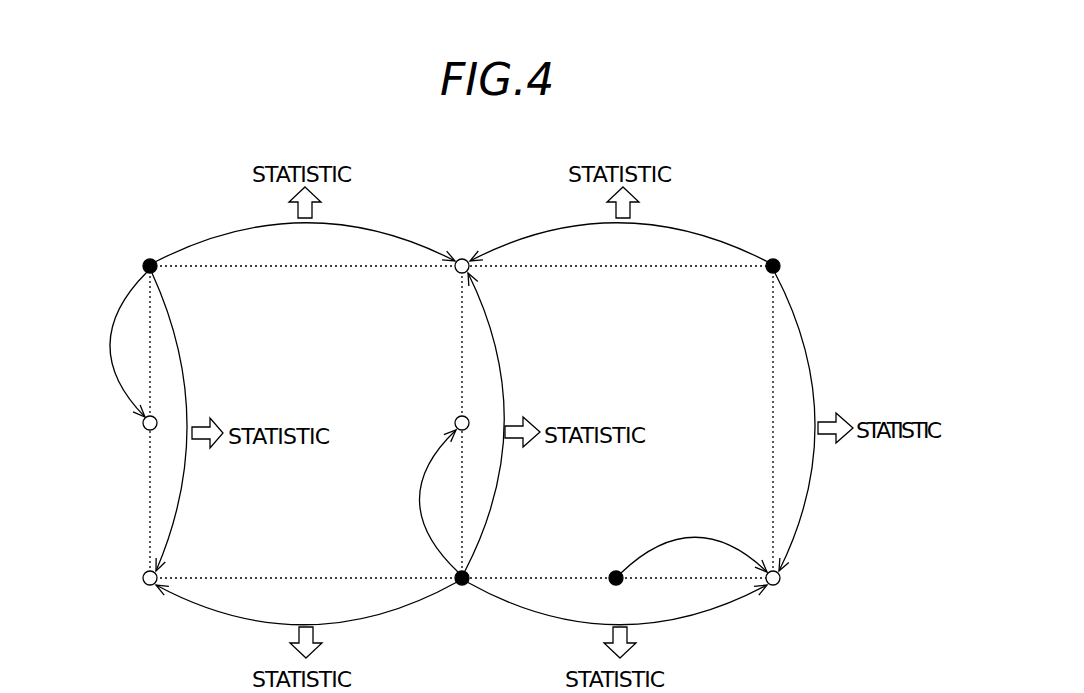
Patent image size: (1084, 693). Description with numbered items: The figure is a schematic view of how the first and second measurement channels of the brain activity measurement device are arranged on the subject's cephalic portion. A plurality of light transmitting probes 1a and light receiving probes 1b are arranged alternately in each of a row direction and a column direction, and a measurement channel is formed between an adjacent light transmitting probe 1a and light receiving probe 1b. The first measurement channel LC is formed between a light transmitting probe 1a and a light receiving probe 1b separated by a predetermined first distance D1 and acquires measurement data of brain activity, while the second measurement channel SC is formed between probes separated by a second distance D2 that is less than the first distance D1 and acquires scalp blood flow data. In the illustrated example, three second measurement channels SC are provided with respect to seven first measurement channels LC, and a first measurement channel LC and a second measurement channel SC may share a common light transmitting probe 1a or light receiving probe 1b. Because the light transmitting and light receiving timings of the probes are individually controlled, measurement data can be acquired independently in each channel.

The light transmitting probe 1a is at (143, 262).
The light receiving probe 1b is at (466, 258).
The first measurement channel LC is at (340, 220).
The second measurement channel SC is at (112, 333).
The first distance D1 is at (618, 610).
The second distance D2 is at (703, 561).